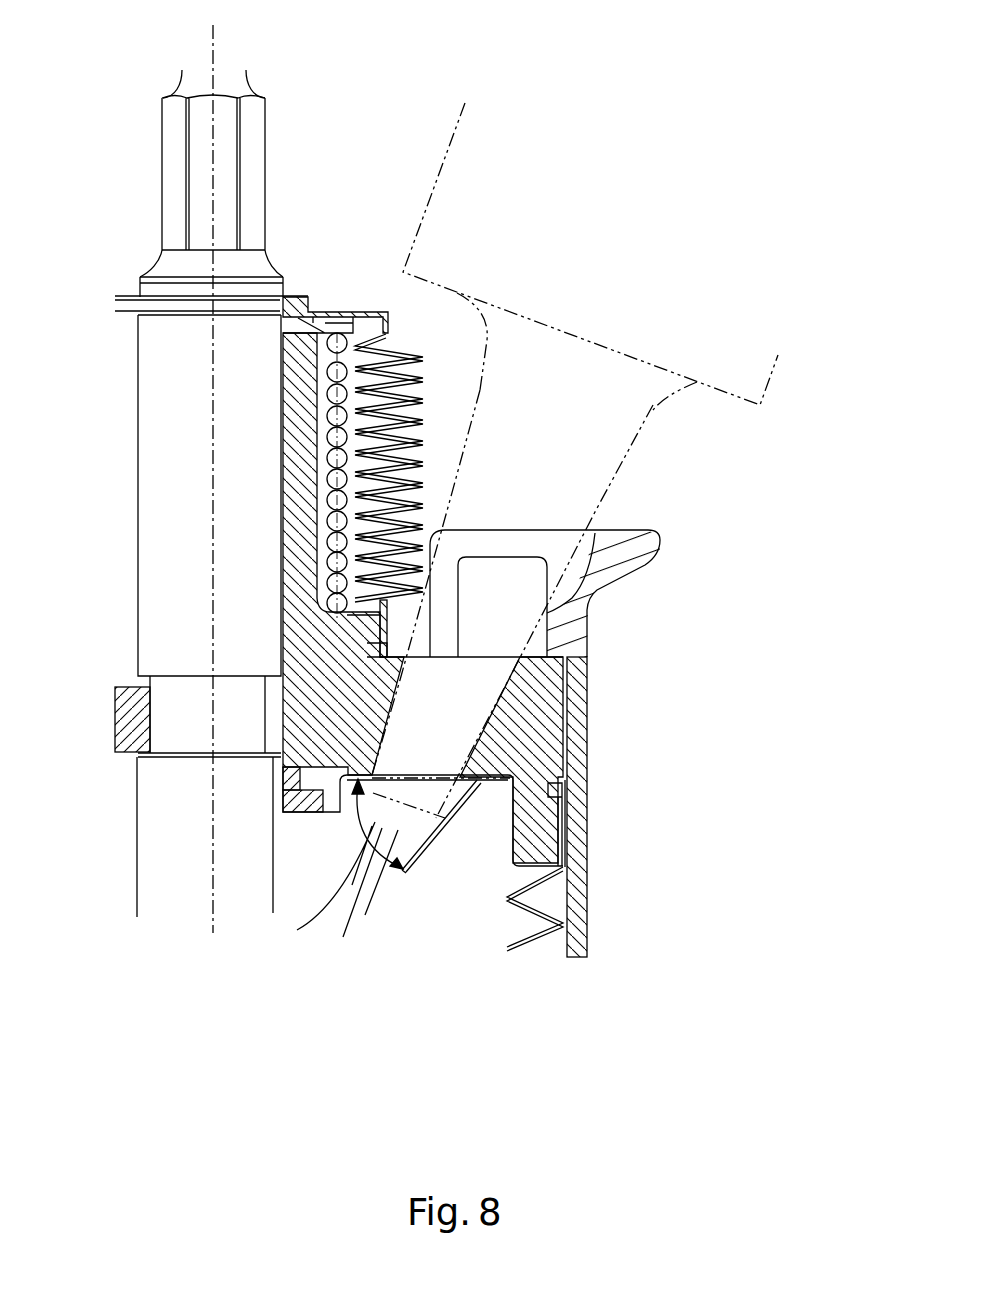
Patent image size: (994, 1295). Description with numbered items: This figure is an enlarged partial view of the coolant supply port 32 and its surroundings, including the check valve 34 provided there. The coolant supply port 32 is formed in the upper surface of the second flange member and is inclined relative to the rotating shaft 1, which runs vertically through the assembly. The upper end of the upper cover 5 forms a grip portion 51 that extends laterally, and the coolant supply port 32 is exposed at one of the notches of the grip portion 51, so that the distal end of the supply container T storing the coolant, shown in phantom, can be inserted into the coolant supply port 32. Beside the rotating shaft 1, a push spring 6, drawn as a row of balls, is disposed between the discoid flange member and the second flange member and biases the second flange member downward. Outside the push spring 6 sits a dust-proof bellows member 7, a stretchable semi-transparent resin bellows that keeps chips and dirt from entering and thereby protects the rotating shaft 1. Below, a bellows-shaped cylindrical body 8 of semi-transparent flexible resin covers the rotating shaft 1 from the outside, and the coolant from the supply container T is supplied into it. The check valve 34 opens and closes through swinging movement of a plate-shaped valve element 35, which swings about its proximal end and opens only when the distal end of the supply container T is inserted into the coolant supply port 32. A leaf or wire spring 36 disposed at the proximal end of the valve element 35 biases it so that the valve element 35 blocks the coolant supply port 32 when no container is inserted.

The rotating shaft 1 is at (175, 582).
The upper cover 5 is at (587, 802).
The push spring 6 is at (335, 375).
The dust-proof bellows member 7 is at (405, 343).
The bellows-shaped cylindrical body 8 is at (543, 903).
The coolant supply port 32 is at (467, 685).
The check valve 34 is at (437, 815).
The plate-shaped valve element 35 is at (423, 860).
The leaf or wire spring 36 is at (473, 807).
The grip portion 51 is at (660, 541).
The supply container T is at (445, 157).